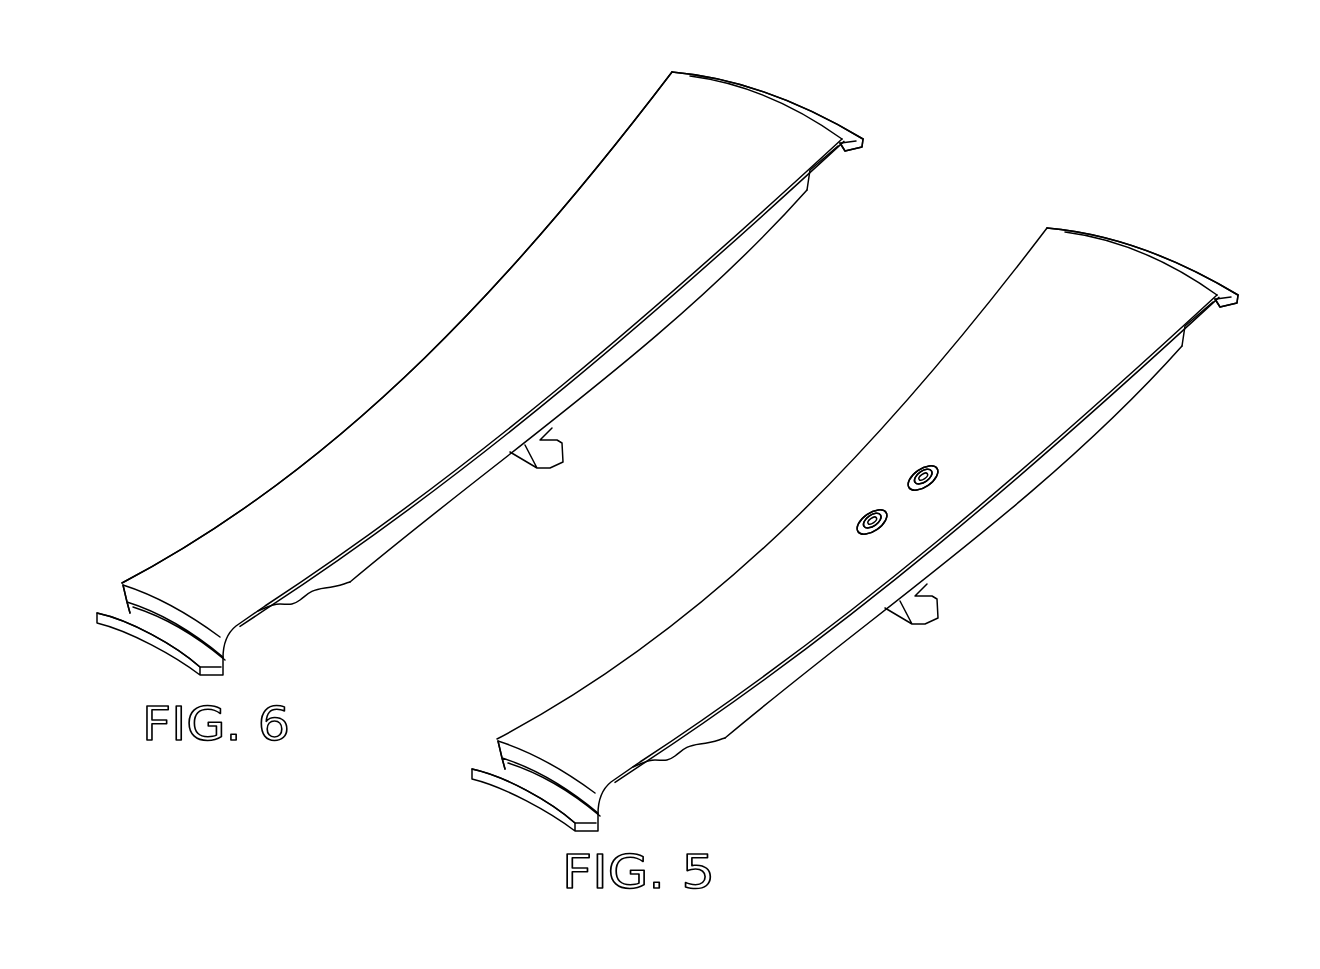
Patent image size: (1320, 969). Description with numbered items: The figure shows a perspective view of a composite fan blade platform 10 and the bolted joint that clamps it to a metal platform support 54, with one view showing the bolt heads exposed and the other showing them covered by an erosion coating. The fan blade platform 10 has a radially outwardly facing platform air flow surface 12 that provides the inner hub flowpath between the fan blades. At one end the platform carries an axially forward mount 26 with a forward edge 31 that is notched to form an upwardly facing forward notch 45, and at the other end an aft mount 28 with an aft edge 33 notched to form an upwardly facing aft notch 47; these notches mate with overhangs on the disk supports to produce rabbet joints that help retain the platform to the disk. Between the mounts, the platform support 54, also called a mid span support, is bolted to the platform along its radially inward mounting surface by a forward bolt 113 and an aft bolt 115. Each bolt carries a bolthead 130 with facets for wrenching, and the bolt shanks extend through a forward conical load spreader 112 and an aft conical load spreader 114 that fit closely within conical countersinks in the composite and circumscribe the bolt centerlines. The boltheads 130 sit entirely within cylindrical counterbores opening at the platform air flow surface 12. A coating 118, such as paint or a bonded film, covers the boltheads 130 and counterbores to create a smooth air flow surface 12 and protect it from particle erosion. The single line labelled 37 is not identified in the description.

In FIG. 6, the fan blade platform 10 is at (492, 364).
In FIG. 5, the fan blade platform 10 is at (855, 520).
In FIG. 6, the platform air flow surface 12 is at (623, 173).
In FIG. 5, the platform air flow surface 12 is at (1022, 317).
In FIG. 6, the forward mount 26 is at (217, 677).
In FIG. 5, the forward mount 26 is at (597, 832).
In FIG. 6, the aft mount 28 is at (853, 150).
In FIG. 5, the aft mount 28 is at (1230, 305).
In FIG. 6, the forward edge 31 is at (138, 585).
In FIG. 5, the forward edge 31 is at (505, 745).
In FIG. 6, the aft edge 33 is at (818, 118).
In FIG. 5, the aft edge 33 is at (1130, 243).
In FIG. 6, the trailing edge 37 is at (447, 476).
In FIG. 5, the trailing edge 37 is at (802, 647).
In FIG. 6, the forward notch 45 is at (130, 615).
In FIG. 5, the forward notch 45 is at (512, 777).
In FIG. 6, the aft notch 47 is at (745, 82).
In FIG. 5, the aft notch 47 is at (1207, 272).
In FIG. 6, the platform support 54 is at (548, 467).
In FIG. 5, the platform support 54 is at (928, 622).
In FIG. 6, the coating 118 is at (545, 300).
In FIG. 5, the bolthead 130 is at (917, 468).
In FIG. 5, the forward conical load spreader 112 is at (883, 524).
In FIG. 5, the forward bolt 113 is at (865, 531).
In FIG. 5, the aft conical load spreader 114 is at (912, 474).
In FIG. 5, the aft bolt 115 is at (933, 474).